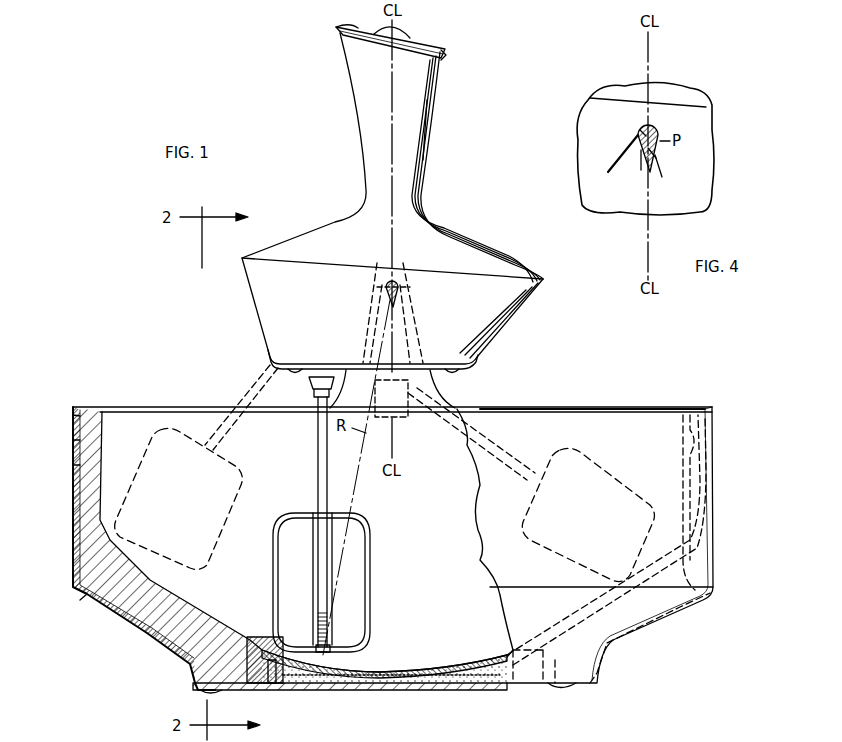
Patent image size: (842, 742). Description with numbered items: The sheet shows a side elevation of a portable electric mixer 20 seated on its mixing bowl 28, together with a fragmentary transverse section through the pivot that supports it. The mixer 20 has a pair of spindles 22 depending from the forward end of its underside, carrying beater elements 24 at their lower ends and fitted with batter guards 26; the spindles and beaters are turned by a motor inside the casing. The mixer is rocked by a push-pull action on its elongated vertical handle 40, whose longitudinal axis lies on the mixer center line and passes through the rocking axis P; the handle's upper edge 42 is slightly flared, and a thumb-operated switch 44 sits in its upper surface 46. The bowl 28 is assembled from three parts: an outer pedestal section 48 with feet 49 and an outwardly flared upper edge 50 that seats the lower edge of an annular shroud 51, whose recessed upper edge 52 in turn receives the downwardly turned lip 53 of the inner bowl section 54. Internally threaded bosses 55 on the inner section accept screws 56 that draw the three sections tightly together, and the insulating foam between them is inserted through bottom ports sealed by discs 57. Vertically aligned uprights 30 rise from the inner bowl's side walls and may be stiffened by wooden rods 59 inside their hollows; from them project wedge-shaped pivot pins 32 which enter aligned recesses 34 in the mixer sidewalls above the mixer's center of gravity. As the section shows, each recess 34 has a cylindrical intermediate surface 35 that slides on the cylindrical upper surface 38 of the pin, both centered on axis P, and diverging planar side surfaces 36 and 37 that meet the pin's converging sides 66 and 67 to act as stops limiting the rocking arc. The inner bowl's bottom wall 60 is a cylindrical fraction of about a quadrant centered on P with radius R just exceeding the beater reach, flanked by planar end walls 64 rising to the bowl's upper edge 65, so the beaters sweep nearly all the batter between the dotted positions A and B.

In FIG. 1, the portable electric mixer 20 is at (449, 215).
In FIG. 4, the portable electric mixer 20 is at (712, 152).
In FIG. 1, the spindles 22 is at (317, 453).
In FIG. 1, the beater elements 24 is at (372, 573).
In FIG. 1, the batter guards 26 is at (311, 387).
In FIG. 1, the bowl 28 is at (620, 407).
In FIG. 1, the uprights or stanchions 30 is at (438, 388).
In FIG. 1, the pivot pins 32 is at (383, 291).
In FIG. 1, the recesses 34 is at (399, 290).
In FIG. 4, the intermediate surface 35 is at (659, 131).
In FIG. 4, the side surface portion 36 is at (613, 172).
In FIG. 4, the side surface portion 37 is at (665, 180).
In FIG. 4, the upper surface 38 is at (637, 134).
In FIG. 1, the handle 40 is at (427, 129).
In FIG. 1, the upper edge 42 is at (441, 57).
In FIG. 1, the switch 44 is at (412, 33).
In FIG. 1, the upper surface 46 is at (356, 27).
In FIG. 1, the pedestal section 48 is at (150, 636).
In FIG. 1, the feet 49 is at (216, 692).
In FIG. 1, the upper edge 50 is at (73, 590).
In FIG. 1, the shroud 51 is at (73, 465).
In FIG. 1, the upper edge 52 is at (73, 441).
In FIG. 1, the lip or flange 53 is at (73, 422).
In FIG. 1, the inner bowl section 54 is at (156, 408).
In FIG. 1, the bosses 55 is at (250, 640).
In FIG. 1, the screws 56 is at (272, 690).
In FIG. 1, the discs 57 is at (320, 692).
In FIG. 1, the wooden rods 59 is at (410, 328).
In FIG. 1, the bottom wall 60 is at (418, 668).
In FIG. 1, the end walls 64 is at (98, 456).
In FIG. 1, the upper edge 65 is at (534, 407).
In FIG. 4, the side 66 is at (641, 170).
In FIG. 4, the side 67 is at (660, 158).